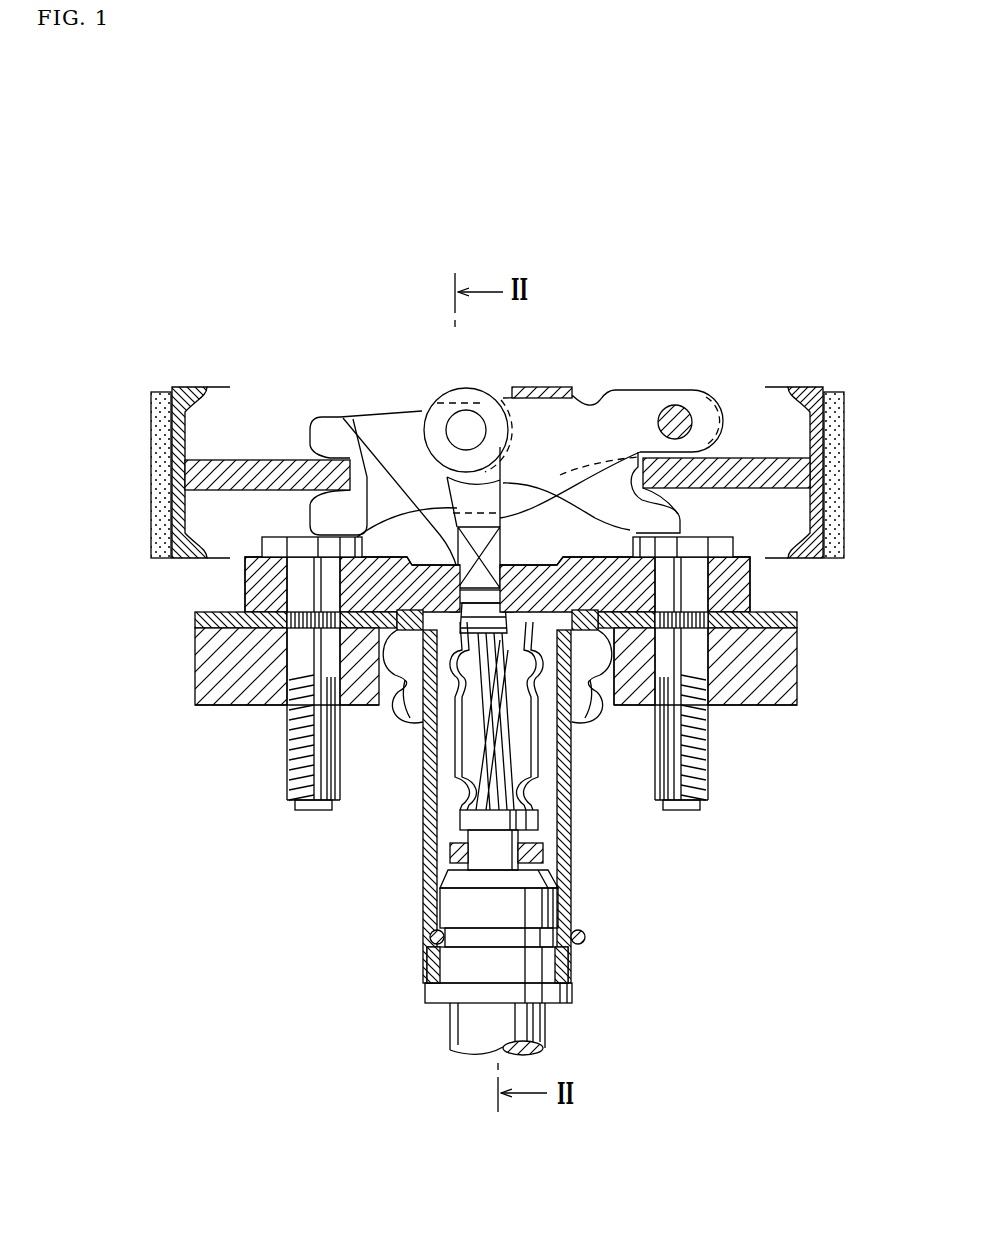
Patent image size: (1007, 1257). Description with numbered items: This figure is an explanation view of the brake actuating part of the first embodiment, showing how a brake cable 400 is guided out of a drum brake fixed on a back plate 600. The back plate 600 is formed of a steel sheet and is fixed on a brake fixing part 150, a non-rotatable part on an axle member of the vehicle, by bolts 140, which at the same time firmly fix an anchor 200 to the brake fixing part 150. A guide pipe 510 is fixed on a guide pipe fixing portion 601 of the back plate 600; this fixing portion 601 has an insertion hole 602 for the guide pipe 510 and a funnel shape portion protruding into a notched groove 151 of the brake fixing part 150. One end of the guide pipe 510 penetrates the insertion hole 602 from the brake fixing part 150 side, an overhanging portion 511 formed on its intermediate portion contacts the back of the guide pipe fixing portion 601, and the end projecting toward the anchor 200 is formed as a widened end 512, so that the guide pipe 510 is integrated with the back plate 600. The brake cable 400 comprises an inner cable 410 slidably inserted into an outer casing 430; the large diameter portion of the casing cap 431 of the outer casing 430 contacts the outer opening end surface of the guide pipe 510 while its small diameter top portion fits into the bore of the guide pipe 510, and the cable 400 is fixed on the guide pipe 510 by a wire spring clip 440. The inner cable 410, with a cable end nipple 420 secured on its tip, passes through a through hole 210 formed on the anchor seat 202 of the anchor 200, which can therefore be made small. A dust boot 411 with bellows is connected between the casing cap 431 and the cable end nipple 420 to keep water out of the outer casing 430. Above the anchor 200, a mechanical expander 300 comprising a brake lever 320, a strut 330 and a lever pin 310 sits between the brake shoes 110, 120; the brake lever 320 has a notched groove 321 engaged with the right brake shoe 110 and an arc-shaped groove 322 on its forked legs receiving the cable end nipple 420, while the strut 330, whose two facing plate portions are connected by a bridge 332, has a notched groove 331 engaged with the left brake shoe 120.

The right brake shoe 110 is at (815, 385).
The left brake shoe 120 is at (180, 385).
The bolt 140 is at (287, 769).
The brake fixing part 150 is at (790, 708).
The notched groove 151 is at (609, 704).
The anchor 200 is at (753, 593).
The anchor seat 202 is at (742, 580).
The through hole 210 is at (369, 425).
The mechanical expander 300 is at (548, 384).
The lever pin 310 is at (680, 418).
The brake lever 320 is at (606, 478).
The notched groove 321 is at (720, 458).
The arc-shaped groove 322 is at (453, 432).
The strut 330 is at (330, 430).
The notched groove 331 is at (307, 460).
The bridge 332 is at (577, 397).
The brake cable 400 is at (553, 1032).
The inner cable 410 is at (470, 842).
The dust boot 411 is at (461, 782).
The cable end nipple 420 is at (470, 388).
The outer casing 430 is at (466, 1034).
The casing cap 431 is at (470, 912).
The wire spring clip 440 is at (586, 941).
The guide pipe 510 is at (572, 892).
The overhanging portion 511 is at (410, 724).
The widened end 512 is at (386, 683).
The back plate 600 is at (196, 620).
The guide pipe fixing portion 601 is at (725, 652).
The insertion hole 602 is at (580, 702).